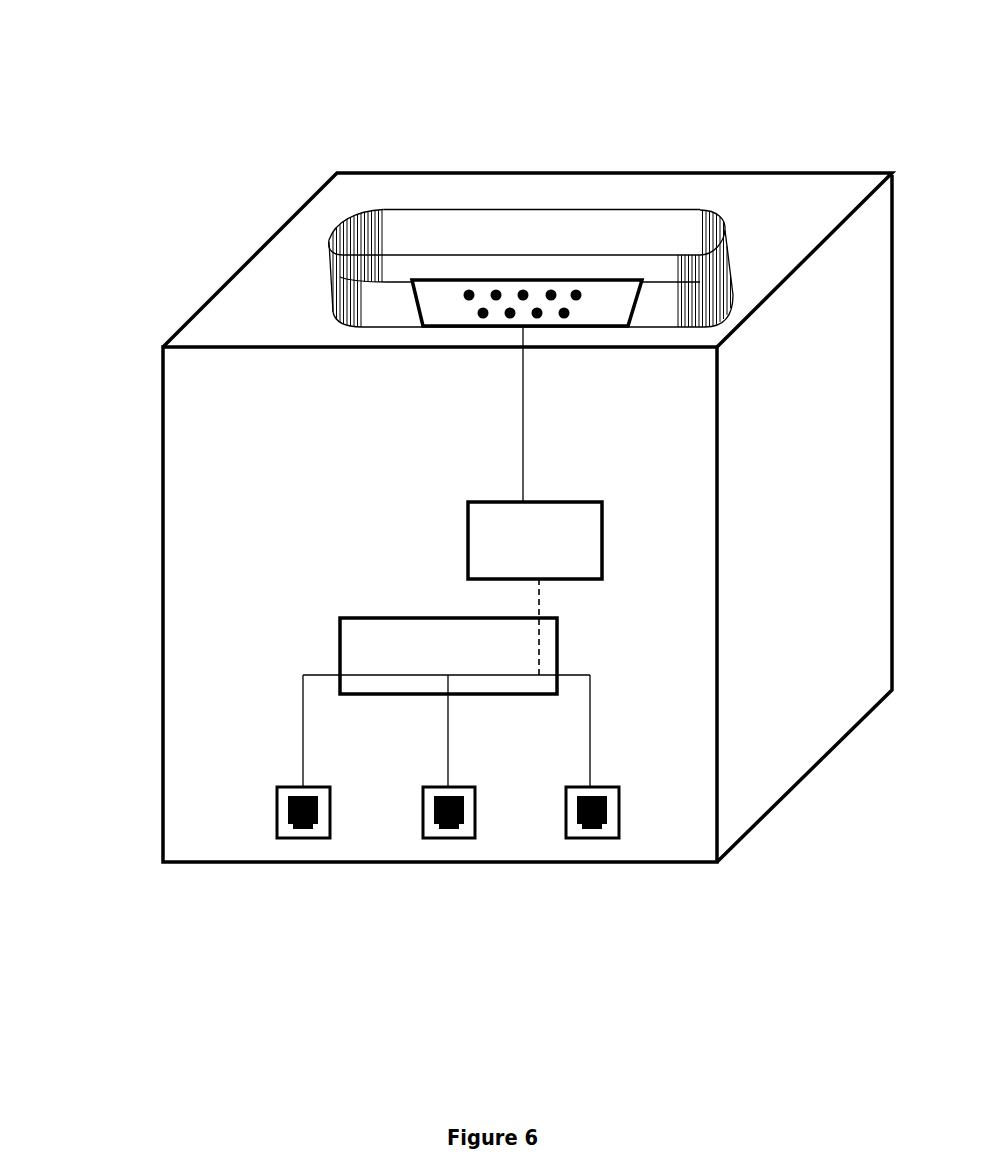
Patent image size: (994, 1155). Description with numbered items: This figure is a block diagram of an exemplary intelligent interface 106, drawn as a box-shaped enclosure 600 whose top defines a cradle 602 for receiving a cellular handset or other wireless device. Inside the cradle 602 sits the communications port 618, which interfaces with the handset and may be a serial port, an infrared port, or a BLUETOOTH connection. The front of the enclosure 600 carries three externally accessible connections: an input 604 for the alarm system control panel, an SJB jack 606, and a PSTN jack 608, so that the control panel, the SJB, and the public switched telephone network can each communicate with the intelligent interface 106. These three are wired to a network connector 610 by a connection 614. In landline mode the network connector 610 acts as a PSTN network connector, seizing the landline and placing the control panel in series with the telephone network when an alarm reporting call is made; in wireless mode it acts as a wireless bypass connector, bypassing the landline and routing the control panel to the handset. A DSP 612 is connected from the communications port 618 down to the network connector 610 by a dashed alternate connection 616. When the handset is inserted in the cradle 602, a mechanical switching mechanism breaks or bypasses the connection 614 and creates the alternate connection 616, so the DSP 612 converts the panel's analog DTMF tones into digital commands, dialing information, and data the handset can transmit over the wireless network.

The intelligent interface 106 is at (266, 86).
The enclosure 600 is at (162, 522).
The cradle 602 is at (327, 245).
The communications port 618 is at (545, 280).
The DSP 612 is at (467, 542).
The network connector 610 is at (340, 645).
The connection 614 is at (483, 675).
The alternate connection 616 is at (543, 592).
The input 604 is at (595, 838).
The SJB jack 606 is at (448, 838).
The PSTN jack 608 is at (297, 838).